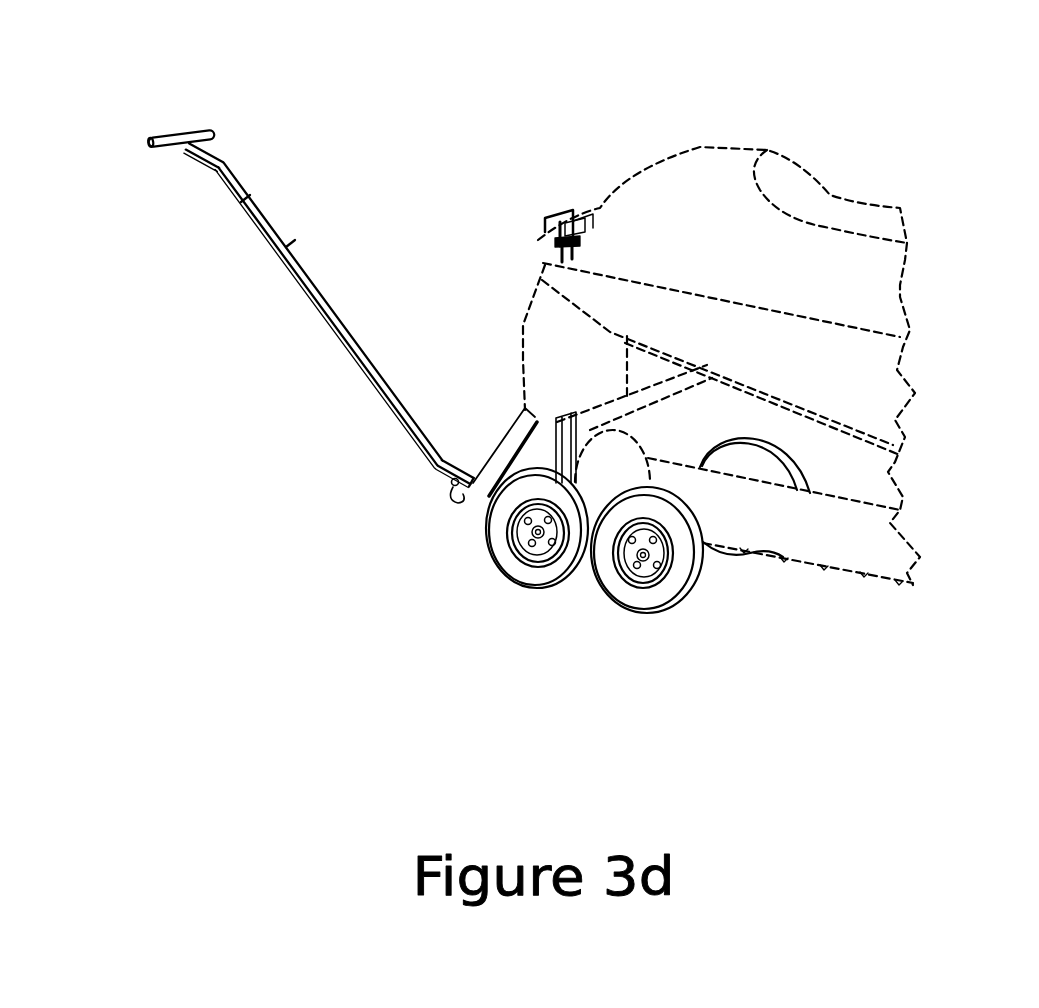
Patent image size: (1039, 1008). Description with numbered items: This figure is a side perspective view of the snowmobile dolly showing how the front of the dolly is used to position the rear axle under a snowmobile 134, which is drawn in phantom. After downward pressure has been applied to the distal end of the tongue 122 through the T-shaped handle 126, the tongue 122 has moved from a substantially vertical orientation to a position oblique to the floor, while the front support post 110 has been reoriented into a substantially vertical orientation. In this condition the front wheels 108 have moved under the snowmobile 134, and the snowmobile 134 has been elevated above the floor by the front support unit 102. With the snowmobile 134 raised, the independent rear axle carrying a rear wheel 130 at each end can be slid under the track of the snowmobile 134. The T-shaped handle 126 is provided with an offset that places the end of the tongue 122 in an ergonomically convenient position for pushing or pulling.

The front support unit 102 is at (473, 455).
The front wheels 108 is at (529, 580).
The front support post 110 is at (558, 249).
The tongue 122 is at (287, 243).
The T-shaped handle 126 is at (190, 153).
The rear wheel 130 is at (648, 604).
The snowmobile 134 is at (661, 182).